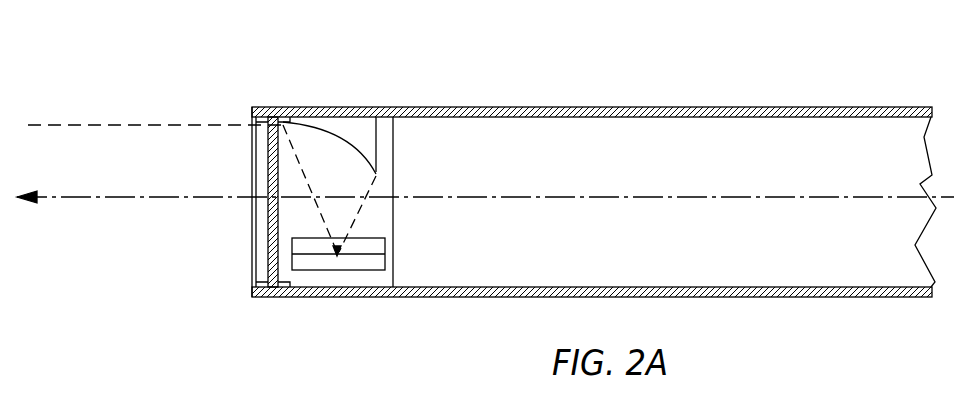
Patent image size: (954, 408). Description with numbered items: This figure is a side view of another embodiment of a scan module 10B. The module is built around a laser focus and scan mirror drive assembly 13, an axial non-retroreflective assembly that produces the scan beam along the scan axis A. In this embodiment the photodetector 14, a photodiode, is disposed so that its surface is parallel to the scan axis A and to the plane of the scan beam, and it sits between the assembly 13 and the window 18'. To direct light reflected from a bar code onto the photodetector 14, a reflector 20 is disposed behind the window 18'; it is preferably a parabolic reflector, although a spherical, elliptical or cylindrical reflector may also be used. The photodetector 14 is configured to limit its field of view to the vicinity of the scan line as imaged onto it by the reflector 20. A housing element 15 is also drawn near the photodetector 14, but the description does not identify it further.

The scan module 10B is at (467, 92).
The laser focus and scan mirror drive assembly 13 is at (582, 137).
The photodetector 14 is at (327, 265).
The detector housing 15 is at (297, 248).
The window 18' is at (225, 202).
The reflector 20 is at (355, 133).
The scan axis A is at (101, 195).